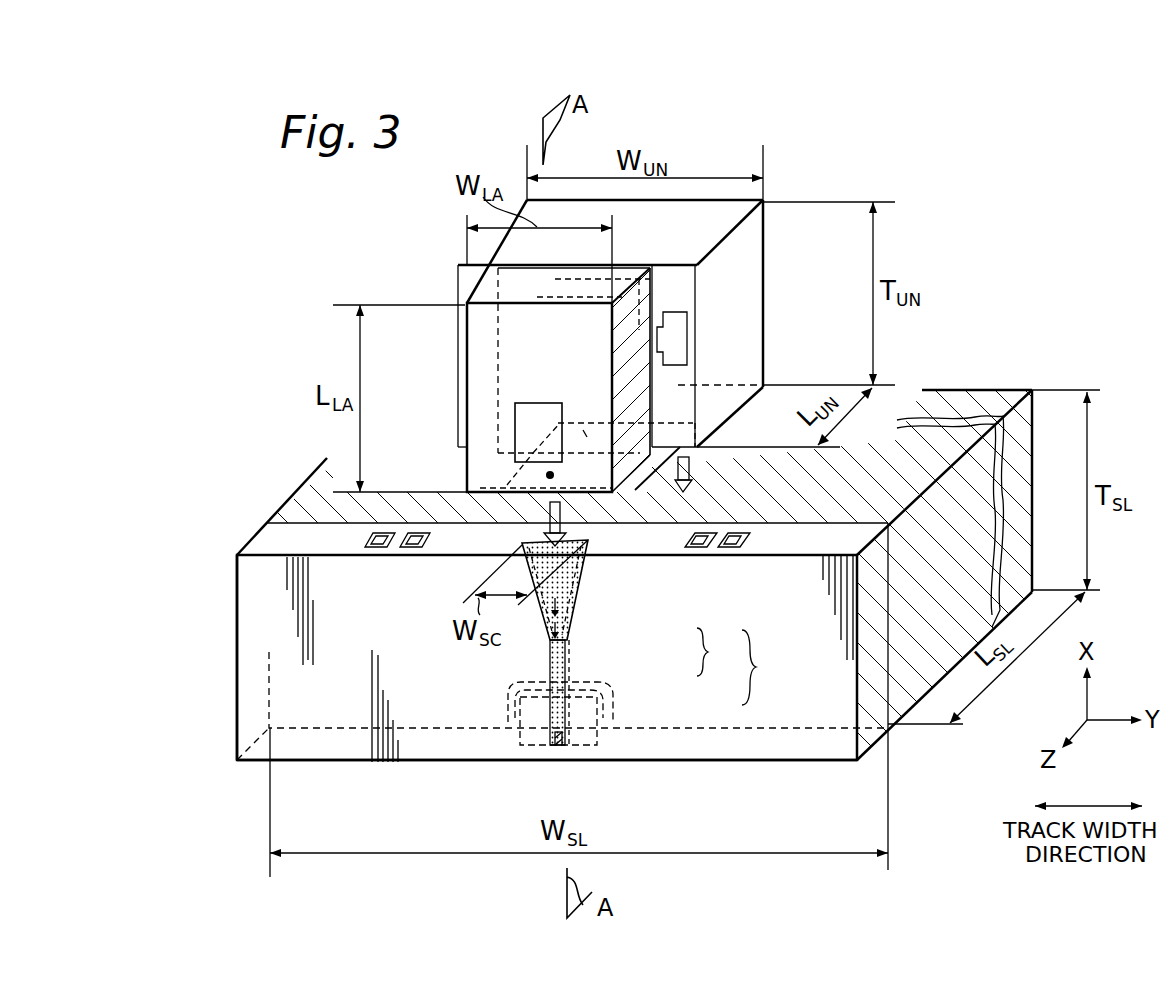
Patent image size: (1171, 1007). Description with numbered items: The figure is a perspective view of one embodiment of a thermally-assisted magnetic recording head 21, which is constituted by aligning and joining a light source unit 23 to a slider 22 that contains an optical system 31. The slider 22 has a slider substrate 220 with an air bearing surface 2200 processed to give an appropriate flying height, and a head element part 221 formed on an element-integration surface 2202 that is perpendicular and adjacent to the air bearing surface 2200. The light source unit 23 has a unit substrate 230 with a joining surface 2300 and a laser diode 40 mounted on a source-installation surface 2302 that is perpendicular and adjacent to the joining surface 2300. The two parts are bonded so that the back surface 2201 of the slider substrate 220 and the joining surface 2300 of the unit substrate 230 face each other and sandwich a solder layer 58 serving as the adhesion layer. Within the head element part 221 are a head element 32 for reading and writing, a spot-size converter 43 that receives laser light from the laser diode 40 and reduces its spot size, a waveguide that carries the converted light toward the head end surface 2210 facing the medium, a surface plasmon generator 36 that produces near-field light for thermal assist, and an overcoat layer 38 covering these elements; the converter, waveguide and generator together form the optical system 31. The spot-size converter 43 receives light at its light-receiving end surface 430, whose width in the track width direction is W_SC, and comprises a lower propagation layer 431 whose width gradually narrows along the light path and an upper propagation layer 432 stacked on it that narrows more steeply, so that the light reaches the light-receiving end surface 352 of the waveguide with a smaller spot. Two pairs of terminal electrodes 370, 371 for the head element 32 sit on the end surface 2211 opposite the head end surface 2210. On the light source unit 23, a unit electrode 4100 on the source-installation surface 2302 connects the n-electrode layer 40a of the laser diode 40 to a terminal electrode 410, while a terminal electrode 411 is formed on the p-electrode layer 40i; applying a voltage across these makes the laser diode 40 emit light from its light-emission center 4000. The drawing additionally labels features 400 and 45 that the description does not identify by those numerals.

The thermally-assisted magnetic recording head 21 is at (1020, 268).
The slider 22 is at (950, 372).
The slider substrate 220 is at (992, 400).
The air bearing surface 2200 is at (900, 677).
The back surface 2201 is at (900, 442).
The element-integration surface 2202 is at (835, 690).
The head element part 221 is at (263, 538).
The end surface 2211 is at (332, 537).
The head end surface 2210 is at (338, 743).
The overcoat layer 38 is at (263, 610).
The terminal electrodes 370 is at (413, 548).
The terminal electrodes 371 is at (702, 548).
The light source unit 23 is at (783, 182).
The unit substrate 230 is at (755, 252).
The source-installation surface 2302 is at (462, 280).
The joining surface 2300 is at (725, 425).
The laser diode 40 is at (521, 283).
The n-electrode layer 40a is at (625, 278).
The p-electrode layer 40i is at (568, 290).
The unit electrode 4100 is at (652, 295).
The terminal electrode 410 is at (677, 337).
The terminal electrode 411 is at (537, 417).
The light-emission center 4000 is at (467, 473).
The light emission surface 400 is at (480, 498).
The solder layer 58 is at (585, 435).
The light-receiving end surface 430 is at (565, 542).
The upper propagation layer 432 is at (557, 592).
The lower propagation layer 431 is at (560, 615).
The spot-size converter 43 is at (720, 652).
The optical system 31 is at (768, 667).
The core of waveguide 45 is at (570, 663).
The light-receiving end surface 352 is at (550, 640).
The surface plasmon generator 36 is at (558, 748).
The head element 32 is at (630, 724).